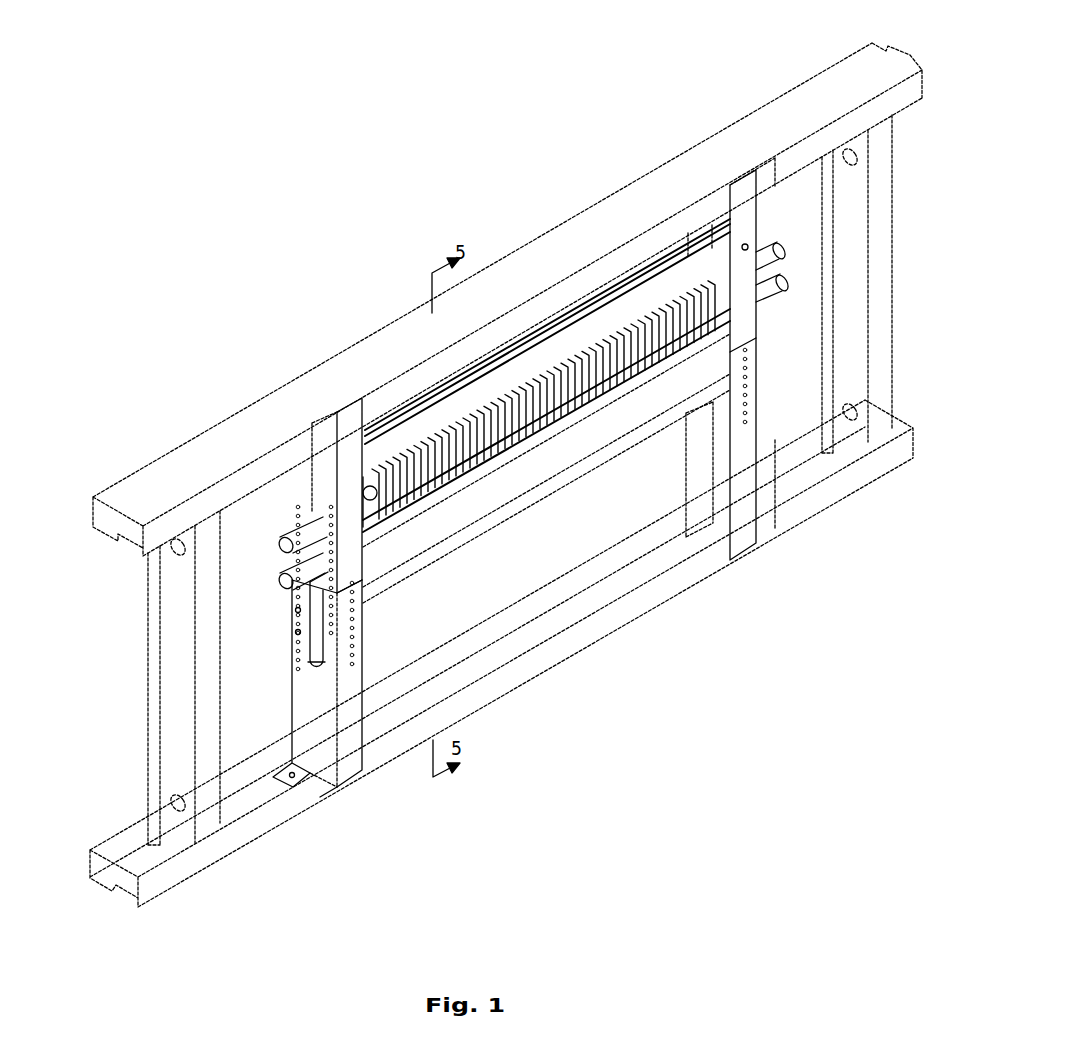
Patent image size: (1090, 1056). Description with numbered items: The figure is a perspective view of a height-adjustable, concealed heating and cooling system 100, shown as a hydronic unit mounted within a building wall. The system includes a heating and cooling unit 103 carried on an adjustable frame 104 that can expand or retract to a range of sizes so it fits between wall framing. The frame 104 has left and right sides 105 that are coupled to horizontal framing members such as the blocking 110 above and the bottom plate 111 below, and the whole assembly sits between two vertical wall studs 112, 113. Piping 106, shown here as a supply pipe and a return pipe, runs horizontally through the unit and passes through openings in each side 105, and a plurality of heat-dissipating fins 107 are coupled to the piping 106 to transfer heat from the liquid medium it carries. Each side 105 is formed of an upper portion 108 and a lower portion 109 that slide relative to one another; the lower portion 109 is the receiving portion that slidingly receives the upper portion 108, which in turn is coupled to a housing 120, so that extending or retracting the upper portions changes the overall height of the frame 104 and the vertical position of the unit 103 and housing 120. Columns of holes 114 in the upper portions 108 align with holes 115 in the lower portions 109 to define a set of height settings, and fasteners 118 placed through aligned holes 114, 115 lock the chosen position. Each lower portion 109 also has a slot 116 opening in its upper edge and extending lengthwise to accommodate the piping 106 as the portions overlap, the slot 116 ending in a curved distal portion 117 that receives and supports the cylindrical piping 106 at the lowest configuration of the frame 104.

The heating and cooling system 100 is at (386, 220).
The heating and cooling unit 103 is at (800, 302).
The adjustable frame 104 is at (347, 412).
The sides 105 is at (745, 213).
The piping 106 is at (313, 470).
The heat-dissipating fins 107 is at (633, 322).
The upper portion 108 is at (312, 462).
The lower portion 109 is at (750, 530).
The blocking 110 is at (827, 107).
The bottom plate 111 is at (848, 495).
The wall stud 112 is at (176, 574).
The wall stud 113 is at (878, 140).
The holes 114 is at (330, 572).
The holes 115 is at (293, 630).
The slot 116 is at (314, 655).
The curved distal portion 117 is at (313, 670).
The fasteners 118 is at (297, 610).
The housing 120 is at (528, 372).